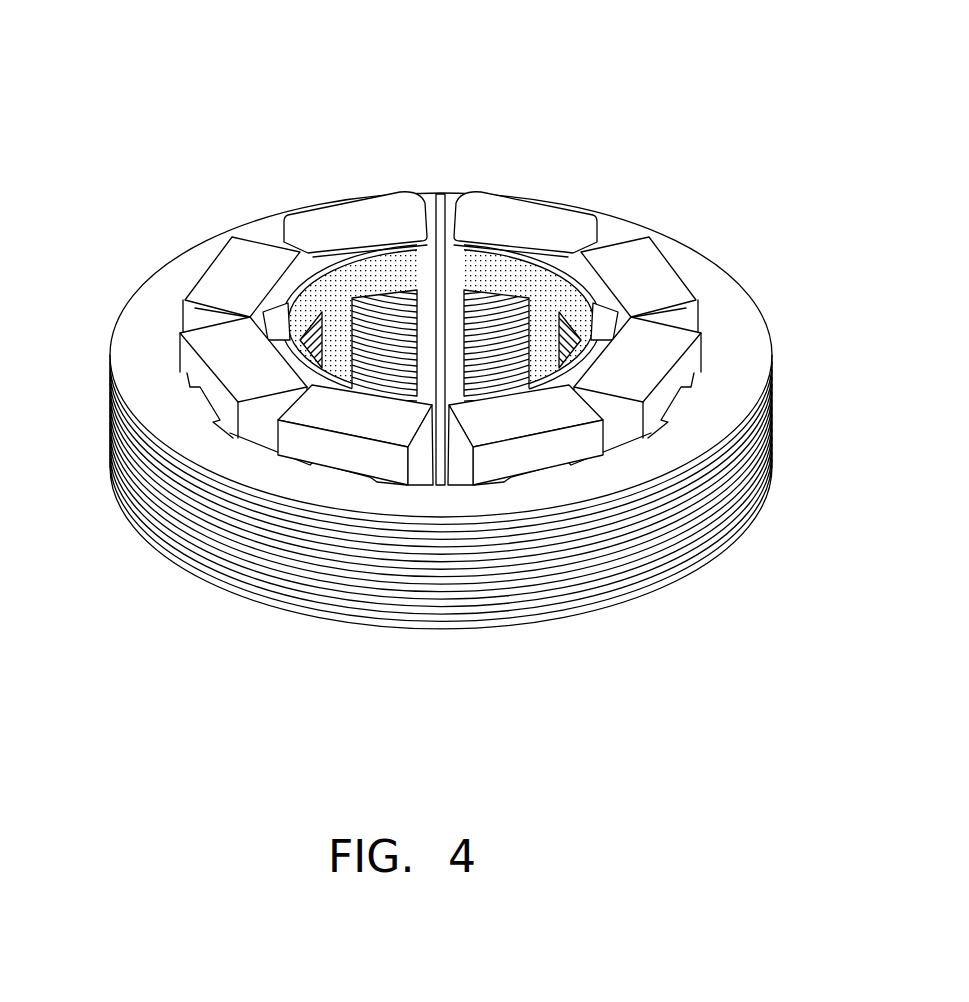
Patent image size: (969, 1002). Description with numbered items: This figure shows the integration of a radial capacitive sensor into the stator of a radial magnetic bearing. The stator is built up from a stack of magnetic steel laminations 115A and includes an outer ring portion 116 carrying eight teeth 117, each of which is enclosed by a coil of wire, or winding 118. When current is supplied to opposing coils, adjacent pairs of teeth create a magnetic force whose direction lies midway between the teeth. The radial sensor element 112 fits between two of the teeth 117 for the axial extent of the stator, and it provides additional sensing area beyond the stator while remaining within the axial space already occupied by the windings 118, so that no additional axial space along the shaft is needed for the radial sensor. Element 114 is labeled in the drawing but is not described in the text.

The radial sensor element 112 is at (292, 267).
The coil winding 114 is at (313, 302).
The magnetic steel laminations 115A is at (578, 543).
The outer ring portion 116 is at (300, 492).
The teeth 117 is at (461, 288).
The winding 118 is at (552, 215).